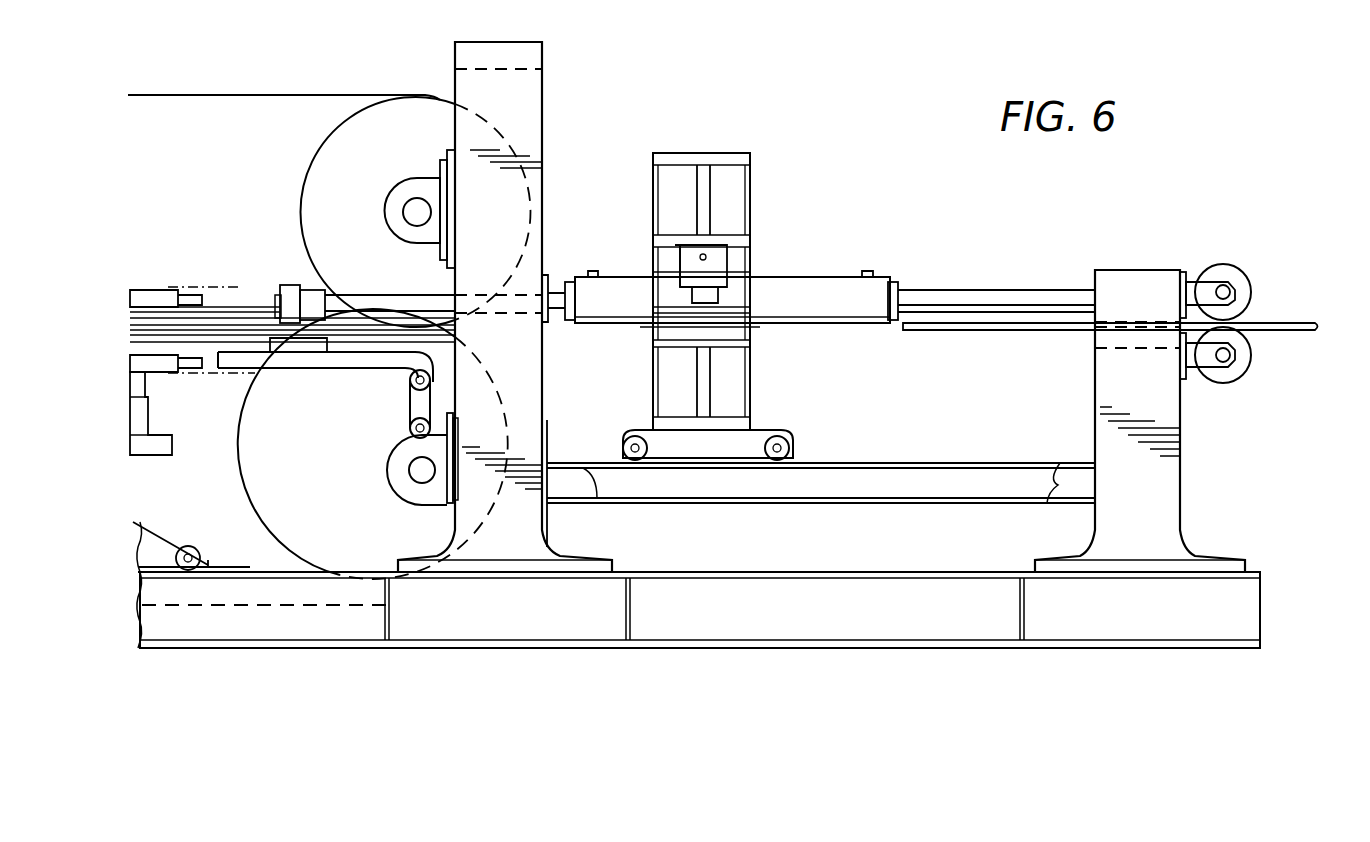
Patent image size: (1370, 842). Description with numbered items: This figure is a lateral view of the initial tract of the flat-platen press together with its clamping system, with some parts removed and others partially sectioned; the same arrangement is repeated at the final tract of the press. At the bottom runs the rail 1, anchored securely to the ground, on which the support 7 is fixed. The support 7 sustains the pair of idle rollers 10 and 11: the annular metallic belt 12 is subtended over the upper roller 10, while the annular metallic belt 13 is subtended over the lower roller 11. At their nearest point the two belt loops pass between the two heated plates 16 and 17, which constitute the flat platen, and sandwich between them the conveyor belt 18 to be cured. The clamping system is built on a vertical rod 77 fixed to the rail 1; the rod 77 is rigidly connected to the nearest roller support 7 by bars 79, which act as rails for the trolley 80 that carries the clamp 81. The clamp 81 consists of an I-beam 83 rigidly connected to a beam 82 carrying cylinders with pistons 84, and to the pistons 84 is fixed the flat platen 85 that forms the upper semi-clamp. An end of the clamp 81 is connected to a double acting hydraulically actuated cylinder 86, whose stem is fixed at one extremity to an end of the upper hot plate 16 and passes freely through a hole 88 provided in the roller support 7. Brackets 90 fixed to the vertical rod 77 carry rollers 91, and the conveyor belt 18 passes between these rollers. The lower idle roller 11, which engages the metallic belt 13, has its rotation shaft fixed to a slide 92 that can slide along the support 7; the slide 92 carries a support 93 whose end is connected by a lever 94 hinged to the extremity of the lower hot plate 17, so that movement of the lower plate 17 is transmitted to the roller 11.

The rail 1 is at (778, 622).
The support 7 is at (505, 95).
The idle roller 10 is at (416, 125).
The idle roller 11 is at (300, 430).
The annular metallic belt 12 is at (252, 92).
The annular metallic belt 13 is at (290, 600).
The upper heated plate 16 is at (235, 312).
The lower heated plate 17 is at (293, 360).
The conveyor belt 18 is at (1293, 302).
The vertical rod 77 is at (1180, 512).
The bar 79 is at (962, 478).
The trolley 80 is at (745, 452).
The clamp 81 is at (757, 268).
The beam 82 is at (715, 400).
The I-beam 83 is at (708, 175).
The piston 84 is at (680, 275).
The flat platen 85 is at (722, 313).
The double acting hydraulically actuated cylinder 86 is at (872, 292).
The hole 88 is at (480, 305).
The bracket 90 is at (1200, 282).
The roller 91 is at (1232, 280).
The slide 92 is at (448, 503).
The support 93 is at (398, 456).
The lever 94 is at (410, 403).